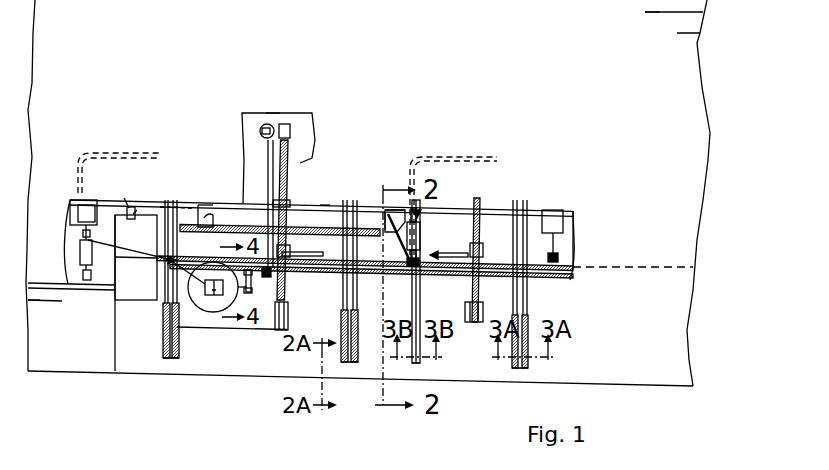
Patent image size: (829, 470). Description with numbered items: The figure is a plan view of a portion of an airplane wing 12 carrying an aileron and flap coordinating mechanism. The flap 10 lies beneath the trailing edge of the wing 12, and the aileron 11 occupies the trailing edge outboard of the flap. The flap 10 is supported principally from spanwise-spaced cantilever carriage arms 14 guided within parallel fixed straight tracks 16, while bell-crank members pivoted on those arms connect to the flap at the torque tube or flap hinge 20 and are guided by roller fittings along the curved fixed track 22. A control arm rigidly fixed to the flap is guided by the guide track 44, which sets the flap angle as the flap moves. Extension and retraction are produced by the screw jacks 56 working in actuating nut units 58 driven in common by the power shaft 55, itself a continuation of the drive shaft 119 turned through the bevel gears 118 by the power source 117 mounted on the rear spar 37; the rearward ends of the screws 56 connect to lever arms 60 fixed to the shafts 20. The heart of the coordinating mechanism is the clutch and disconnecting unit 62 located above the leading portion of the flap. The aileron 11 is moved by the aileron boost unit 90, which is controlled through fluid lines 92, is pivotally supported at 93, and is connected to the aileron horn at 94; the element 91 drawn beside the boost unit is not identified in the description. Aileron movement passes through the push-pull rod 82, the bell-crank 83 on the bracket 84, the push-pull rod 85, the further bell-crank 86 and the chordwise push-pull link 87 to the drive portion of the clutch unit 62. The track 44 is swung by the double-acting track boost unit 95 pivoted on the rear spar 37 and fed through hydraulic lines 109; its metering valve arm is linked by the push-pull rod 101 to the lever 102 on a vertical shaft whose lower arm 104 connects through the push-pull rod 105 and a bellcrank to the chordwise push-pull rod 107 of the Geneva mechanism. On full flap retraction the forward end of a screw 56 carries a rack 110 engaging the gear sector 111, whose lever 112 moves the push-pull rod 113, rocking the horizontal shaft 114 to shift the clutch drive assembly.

The flap 10 is at (125, 367).
The aileron 11 is at (76, 345).
The wing 12 is at (300, 40).
The cantilever carriage arms 14 is at (172, 287).
The fixed straight tracks 16 is at (170, 368).
The flap hinge torque tube 20 is at (231, 329).
The curved fixed track 22 is at (164, 308).
The rear spar 37 is at (232, 185).
The guide track 44 is at (422, 296).
The power shaft 55 is at (306, 252).
The screw jacks 56 is at (290, 163).
The actuating nut units 58 is at (291, 247).
The lever arms 60 is at (289, 318).
The clutch and disconnecting unit 62 is at (205, 305).
The push-pull rod 82 is at (118, 274).
The bell-crank 83 is at (126, 194).
The bracket 84 is at (136, 215).
The push-pull rod 85 is at (133, 214).
The bell-crank 86 is at (230, 198).
The push-pull link 87 is at (226, 235).
The aileron boost unit 90 is at (76, 248).
The piston rod 91 is at (118, 246).
The fluid lines 92 is at (85, 204).
The boost unit pivotal support 93 is at (80, 233).
The aileron horn pivotal connection 94 is at (82, 274).
The track boost unit 95 is at (426, 232).
The push-pull rod 101 is at (395, 244).
The lever 102 is at (392, 212).
The arm 104 is at (384, 212).
The push-pull rod 105 is at (325, 205).
The push-pull rod 107 is at (203, 204).
The hydraulic lines 109 is at (453, 157).
The rack 110 is at (287, 124).
The gear sector 111 is at (273, 115).
The lever 112 is at (266, 124).
The push-pull rod 113 is at (262, 159).
The horizontal shaft 114 is at (260, 286).
The power source 117 is at (565, 222).
The bevel gears 118 is at (560, 258).
The drive shaft 119 is at (533, 211).